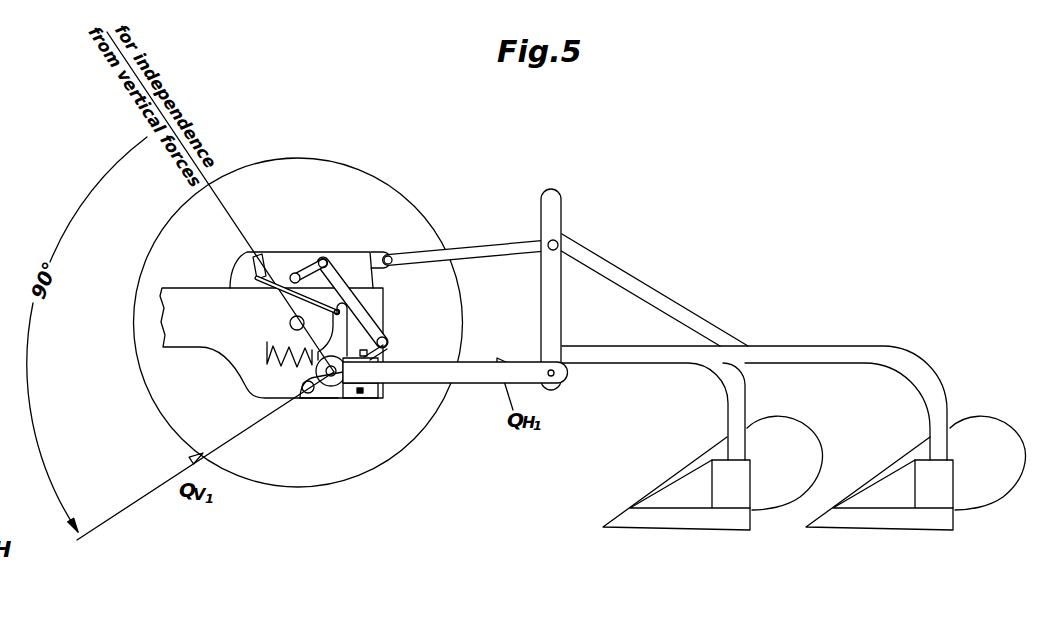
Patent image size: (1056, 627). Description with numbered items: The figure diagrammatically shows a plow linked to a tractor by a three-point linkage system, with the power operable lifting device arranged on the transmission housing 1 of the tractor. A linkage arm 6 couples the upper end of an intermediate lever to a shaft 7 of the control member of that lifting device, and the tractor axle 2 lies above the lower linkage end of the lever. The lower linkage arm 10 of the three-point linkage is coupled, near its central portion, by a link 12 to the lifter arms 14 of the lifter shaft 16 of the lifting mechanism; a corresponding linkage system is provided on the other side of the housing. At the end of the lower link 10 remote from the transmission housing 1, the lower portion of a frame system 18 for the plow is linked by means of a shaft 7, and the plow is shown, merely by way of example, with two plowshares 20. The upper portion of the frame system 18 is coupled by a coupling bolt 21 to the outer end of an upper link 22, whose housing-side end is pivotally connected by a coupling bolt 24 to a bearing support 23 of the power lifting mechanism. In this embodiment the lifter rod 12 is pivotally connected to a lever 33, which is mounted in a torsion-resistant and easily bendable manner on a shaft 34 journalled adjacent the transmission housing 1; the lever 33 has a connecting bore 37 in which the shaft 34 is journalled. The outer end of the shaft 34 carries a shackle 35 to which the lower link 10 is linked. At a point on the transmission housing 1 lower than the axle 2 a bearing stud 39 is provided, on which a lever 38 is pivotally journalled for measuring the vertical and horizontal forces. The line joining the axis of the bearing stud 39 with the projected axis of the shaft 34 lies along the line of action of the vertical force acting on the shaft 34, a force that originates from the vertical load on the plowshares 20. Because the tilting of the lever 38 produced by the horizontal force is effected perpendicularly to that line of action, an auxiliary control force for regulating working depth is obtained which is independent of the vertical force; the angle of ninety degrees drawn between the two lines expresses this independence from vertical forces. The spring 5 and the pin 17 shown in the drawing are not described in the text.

The transmission housing 1 is at (193, 298).
The axle 2 is at (290, 322).
The spring 5 is at (277, 363).
The linkage arm 6 is at (273, 292).
The shaft 7 is at (267, 265).
The lower linkage arm 10 is at (468, 376).
The link 12 is at (357, 308).
The lifter arms 14 is at (305, 273).
The lifter shaft 16 is at (293, 272).
The pivot pin 17 is at (560, 384).
The frame system 18 is at (670, 302).
The plowshares 20 is at (787, 432).
The coupling bolt 21 is at (565, 235).
The upper link 22 is at (495, 245).
The bearing support 23 is at (377, 250).
The coupling bolt 24 is at (393, 257).
The lever 33 is at (380, 339).
The shaft 34 is at (338, 384).
The shackle 35 is at (330, 382).
The connecting bore 37 is at (363, 390).
The lever 38 is at (320, 402).
The bearing stud 39 is at (311, 398).